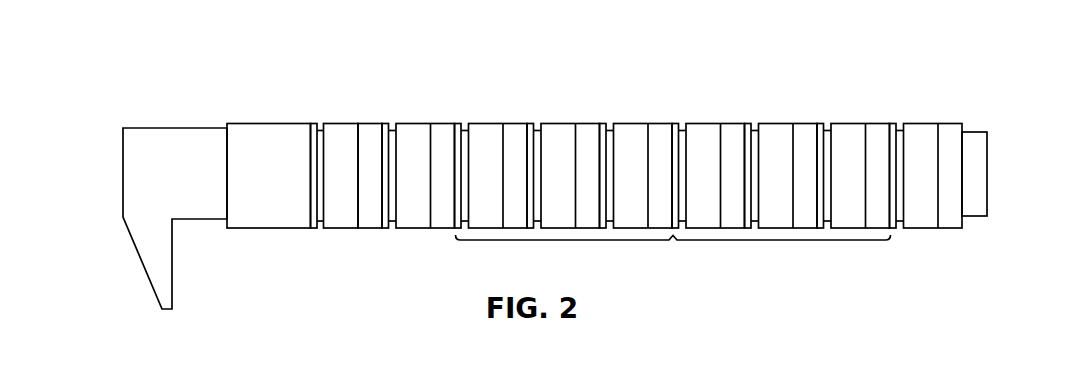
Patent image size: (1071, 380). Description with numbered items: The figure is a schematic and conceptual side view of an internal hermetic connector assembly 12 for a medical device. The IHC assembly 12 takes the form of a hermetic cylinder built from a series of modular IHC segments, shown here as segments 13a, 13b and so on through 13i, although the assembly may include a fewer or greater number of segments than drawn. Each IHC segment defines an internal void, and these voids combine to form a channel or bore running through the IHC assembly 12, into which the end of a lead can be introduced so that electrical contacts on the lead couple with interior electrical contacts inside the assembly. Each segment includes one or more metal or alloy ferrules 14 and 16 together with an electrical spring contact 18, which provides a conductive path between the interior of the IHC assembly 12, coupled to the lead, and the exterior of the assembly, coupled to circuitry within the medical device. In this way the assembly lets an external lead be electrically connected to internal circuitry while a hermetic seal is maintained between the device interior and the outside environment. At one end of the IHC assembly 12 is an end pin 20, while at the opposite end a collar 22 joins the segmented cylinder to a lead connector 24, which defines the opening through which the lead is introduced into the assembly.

The internal hermetic connector assembly 12 is at (136, 40).
The IHC segment 13a is at (383, 235).
The IHC segment 13b is at (456, 235).
The IHC segment 13i is at (963, 235).
The ferrule 14 is at (314, 124).
The ferrule 16 is at (335, 123).
The electrical spring contact 18 is at (375, 125).
The end pin 20 is at (975, 148).
The collar 22 is at (240, 210).
The lead connector 24 is at (149, 205).